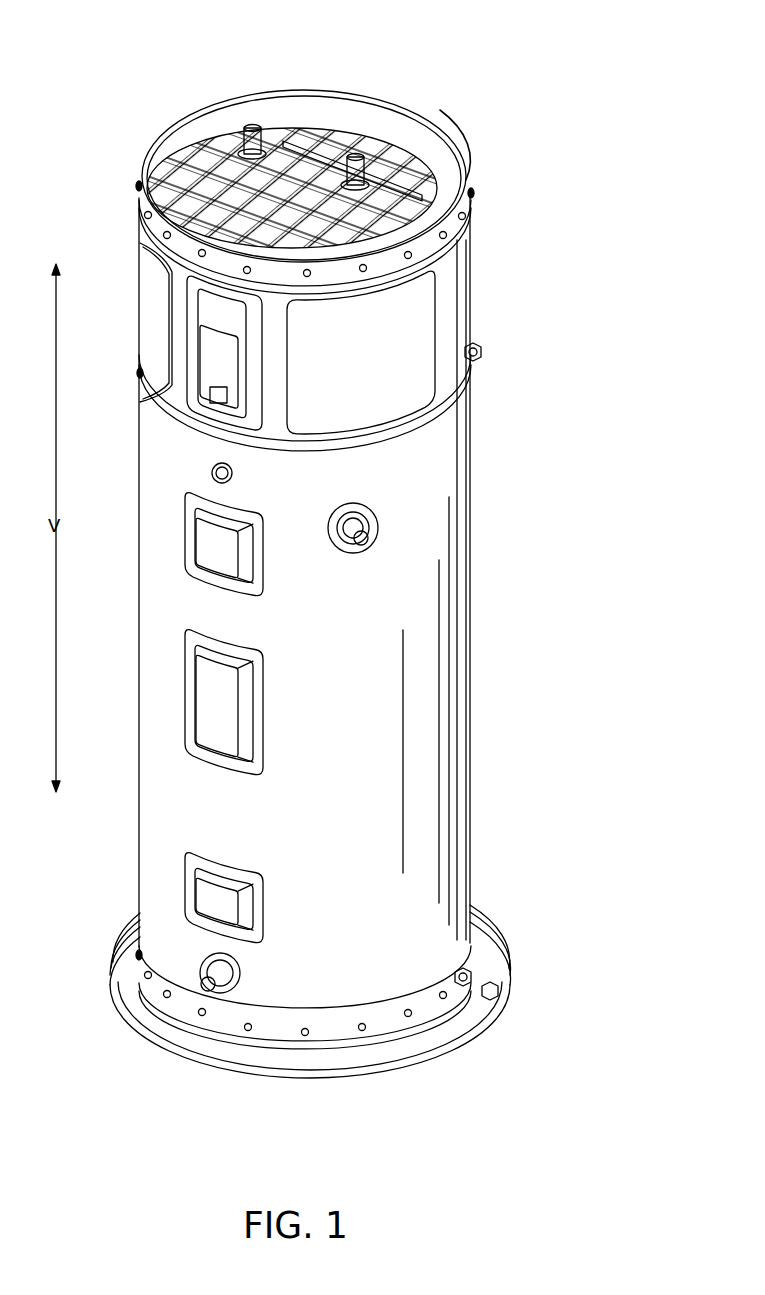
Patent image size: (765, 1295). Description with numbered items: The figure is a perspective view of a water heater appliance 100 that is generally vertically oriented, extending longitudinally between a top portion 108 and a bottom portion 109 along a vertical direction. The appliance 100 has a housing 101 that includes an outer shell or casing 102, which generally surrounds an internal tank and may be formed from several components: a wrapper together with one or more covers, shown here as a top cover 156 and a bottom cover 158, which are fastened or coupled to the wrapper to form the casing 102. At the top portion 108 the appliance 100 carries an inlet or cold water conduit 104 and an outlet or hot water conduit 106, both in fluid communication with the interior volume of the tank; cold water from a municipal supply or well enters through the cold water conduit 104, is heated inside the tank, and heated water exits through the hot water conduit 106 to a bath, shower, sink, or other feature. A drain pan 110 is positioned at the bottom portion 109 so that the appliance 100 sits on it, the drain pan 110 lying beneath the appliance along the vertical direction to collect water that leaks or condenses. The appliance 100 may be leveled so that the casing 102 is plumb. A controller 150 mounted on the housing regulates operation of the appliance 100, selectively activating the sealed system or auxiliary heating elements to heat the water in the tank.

The water heater appliance 100 is at (556, 87).
The housing 101 is at (552, 692).
The casing 102 is at (450, 517).
The cold water conduit 104 is at (368, 165).
The hot water conduit 106 is at (240, 135).
The top portion 108 is at (116, 168).
The bottom portion 109 is at (90, 941).
The drain pan 110 is at (526, 941).
The controller 150 is at (217, 363).
The top cover 156 is at (473, 156).
The bottom cover 158 is at (426, 998).